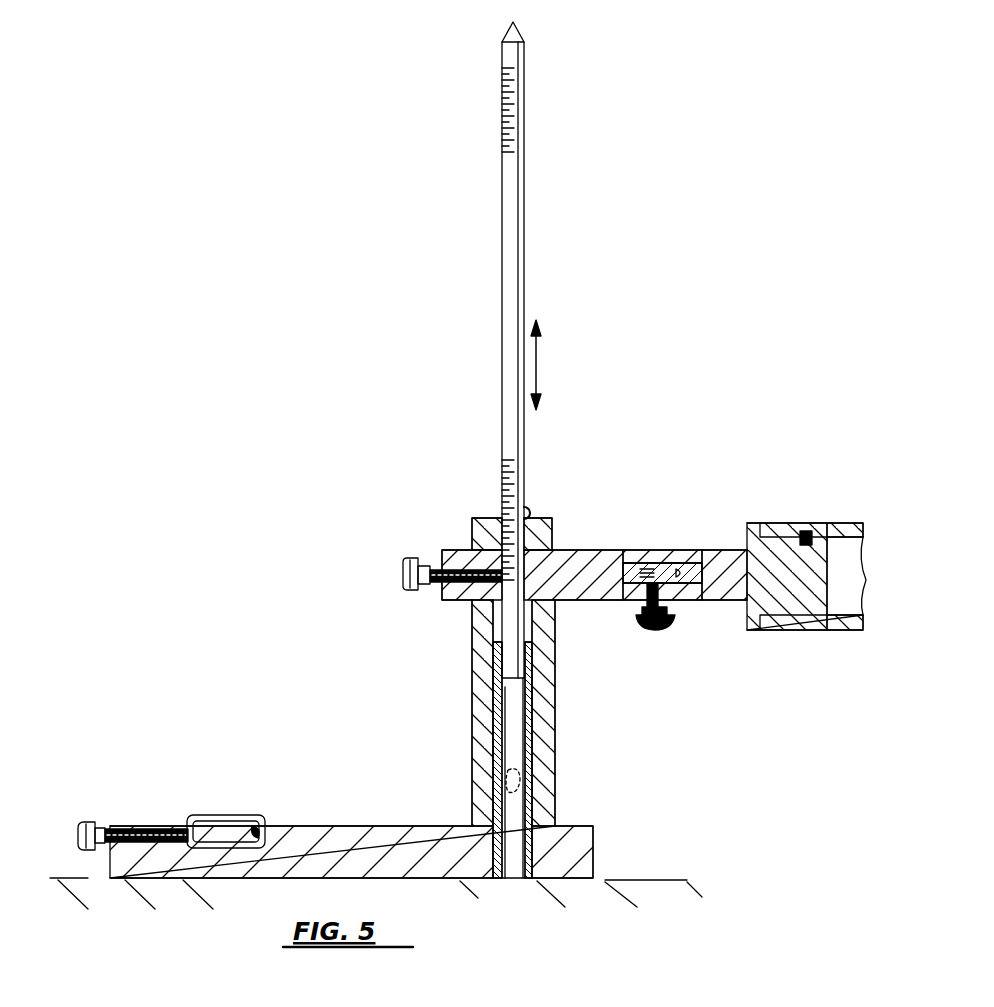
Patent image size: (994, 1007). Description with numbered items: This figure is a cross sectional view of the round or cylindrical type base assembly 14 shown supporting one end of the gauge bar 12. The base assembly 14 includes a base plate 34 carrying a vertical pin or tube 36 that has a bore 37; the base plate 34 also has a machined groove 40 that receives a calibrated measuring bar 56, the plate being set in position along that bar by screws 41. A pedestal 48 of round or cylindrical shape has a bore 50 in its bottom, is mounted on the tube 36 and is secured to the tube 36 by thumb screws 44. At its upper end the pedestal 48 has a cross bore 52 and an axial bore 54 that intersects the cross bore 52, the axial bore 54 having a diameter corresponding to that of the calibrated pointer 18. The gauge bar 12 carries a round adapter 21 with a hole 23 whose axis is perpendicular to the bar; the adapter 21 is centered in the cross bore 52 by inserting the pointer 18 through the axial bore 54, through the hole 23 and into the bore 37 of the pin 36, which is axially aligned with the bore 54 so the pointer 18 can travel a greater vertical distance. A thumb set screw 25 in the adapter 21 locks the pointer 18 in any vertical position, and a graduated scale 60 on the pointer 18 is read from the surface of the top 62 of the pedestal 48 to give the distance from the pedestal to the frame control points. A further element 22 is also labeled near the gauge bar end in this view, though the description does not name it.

The gauge bar 12 is at (843, 527).
The base assembly 14 is at (565, 244).
The calibrated pointer 18 is at (527, 168).
The adapter 21 is at (447, 550).
The set screw 22 is at (782, 525).
The hole 23 is at (435, 585).
The set screw 25 is at (402, 572).
The base plate 34 is at (593, 828).
The vertical pin or tube 36 is at (548, 797).
The bore 37 is at (515, 703).
The groove 40 is at (258, 822).
The screws 41 is at (100, 785).
The thumb screws 44 is at (522, 768).
The pedestal 48 is at (472, 635).
The bore 50 is at (505, 705).
The cross bore 52 is at (572, 548).
The axial bore 54 is at (528, 508).
The calibrated measuring bar 56 is at (235, 768).
The graduated scale 60 is at (501, 108).
The top 62 is at (478, 518).